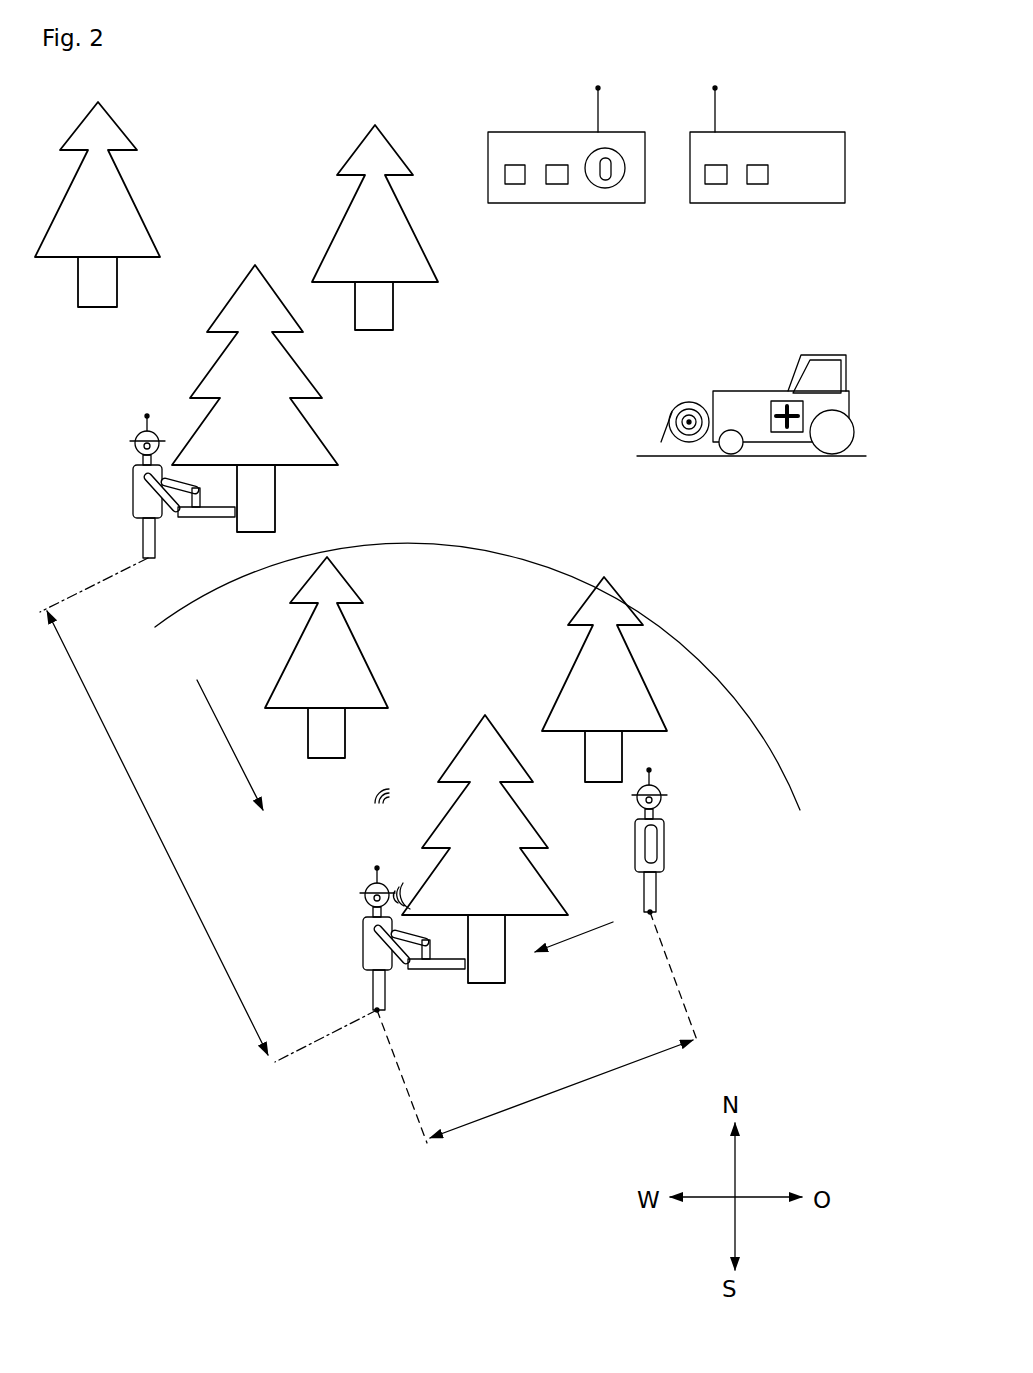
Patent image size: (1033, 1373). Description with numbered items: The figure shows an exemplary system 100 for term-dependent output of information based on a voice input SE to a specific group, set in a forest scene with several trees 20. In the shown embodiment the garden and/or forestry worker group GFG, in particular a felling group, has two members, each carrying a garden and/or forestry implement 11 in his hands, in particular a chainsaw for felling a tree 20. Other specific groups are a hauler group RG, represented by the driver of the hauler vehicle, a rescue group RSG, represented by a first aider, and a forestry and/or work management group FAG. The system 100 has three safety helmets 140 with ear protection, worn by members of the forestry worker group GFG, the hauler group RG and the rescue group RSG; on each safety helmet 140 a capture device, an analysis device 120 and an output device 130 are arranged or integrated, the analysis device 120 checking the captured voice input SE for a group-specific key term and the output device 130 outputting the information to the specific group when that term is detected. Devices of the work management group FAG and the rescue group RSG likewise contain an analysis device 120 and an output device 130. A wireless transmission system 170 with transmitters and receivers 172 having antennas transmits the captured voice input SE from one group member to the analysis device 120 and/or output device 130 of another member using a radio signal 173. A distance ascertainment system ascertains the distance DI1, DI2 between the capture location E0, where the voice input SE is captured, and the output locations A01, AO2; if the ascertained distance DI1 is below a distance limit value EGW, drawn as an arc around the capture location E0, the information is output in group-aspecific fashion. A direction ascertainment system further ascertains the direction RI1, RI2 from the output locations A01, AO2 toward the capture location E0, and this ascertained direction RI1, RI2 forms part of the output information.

The tree 20 is at (467, 740).
The garden and/or forestry implement 11 is at (443, 969).
The system 100 is at (324, 1128).
The analysis device 120 is at (556, 178).
The output device 130 is at (514, 178).
The safety helmet 140 is at (135, 433).
The wireless transmission system 170 is at (680, 88).
The receiver 172 is at (601, 110).
The radio signal 173 is at (387, 795).
The forestry and/or work management group FAG is at (517, 130).
The rescue group RSG is at (810, 130).
The garden and/or forestry worker group GFG is at (247, 746).
The hauler group RG is at (664, 822).
The voice input SE is at (410, 893).
The capture location E0 is at (377, 1012).
The output location A01 is at (652, 912).
The output location AO2 is at (150, 558).
The distance DI1 is at (561, 1089).
The distance DI2 is at (157, 833).
The direction RI1 is at (592, 932).
The direction RI2 is at (224, 735).
The distance limit value EGW is at (753, 725).